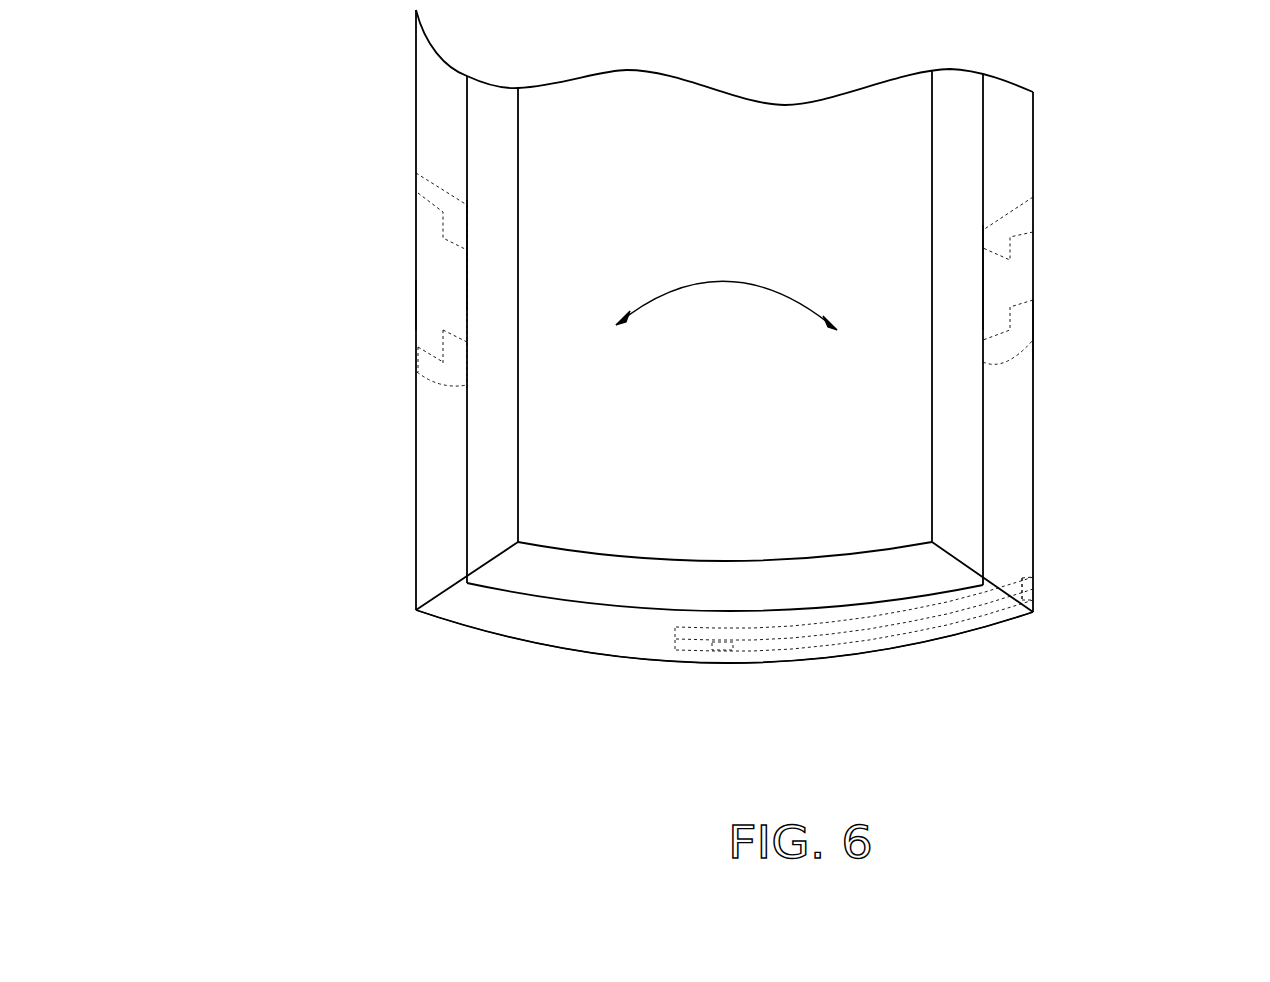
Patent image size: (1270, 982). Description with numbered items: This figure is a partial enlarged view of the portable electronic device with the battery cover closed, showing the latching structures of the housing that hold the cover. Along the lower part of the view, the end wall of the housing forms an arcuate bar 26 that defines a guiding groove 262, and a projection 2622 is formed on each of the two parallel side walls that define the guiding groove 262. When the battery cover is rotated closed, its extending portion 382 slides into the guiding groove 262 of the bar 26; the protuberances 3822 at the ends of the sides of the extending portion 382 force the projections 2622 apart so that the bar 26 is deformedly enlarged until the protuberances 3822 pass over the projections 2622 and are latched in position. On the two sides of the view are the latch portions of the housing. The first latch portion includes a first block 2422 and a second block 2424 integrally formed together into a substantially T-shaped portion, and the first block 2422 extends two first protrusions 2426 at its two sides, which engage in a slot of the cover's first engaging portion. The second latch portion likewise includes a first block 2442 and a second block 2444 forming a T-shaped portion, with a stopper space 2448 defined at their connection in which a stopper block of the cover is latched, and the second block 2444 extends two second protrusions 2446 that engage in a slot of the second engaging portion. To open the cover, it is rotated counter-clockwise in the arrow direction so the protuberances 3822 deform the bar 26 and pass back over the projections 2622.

The arcuate bar 26 is at (680, 633).
The guiding groove 262 is at (682, 648).
The projection 2622 is at (732, 647).
The extending portion 382 is at (883, 635).
The protuberance 3822 is at (722, 650).
The first block 2422 is at (447, 250).
The second block 2424 is at (458, 303).
The first protrusion 2426 is at (417, 204).
The stopper space 2448 is at (460, 355).
The first block 2442 is at (1000, 333).
The second block 2444 is at (1018, 273).
The second protrusion 2446 is at (1030, 247).